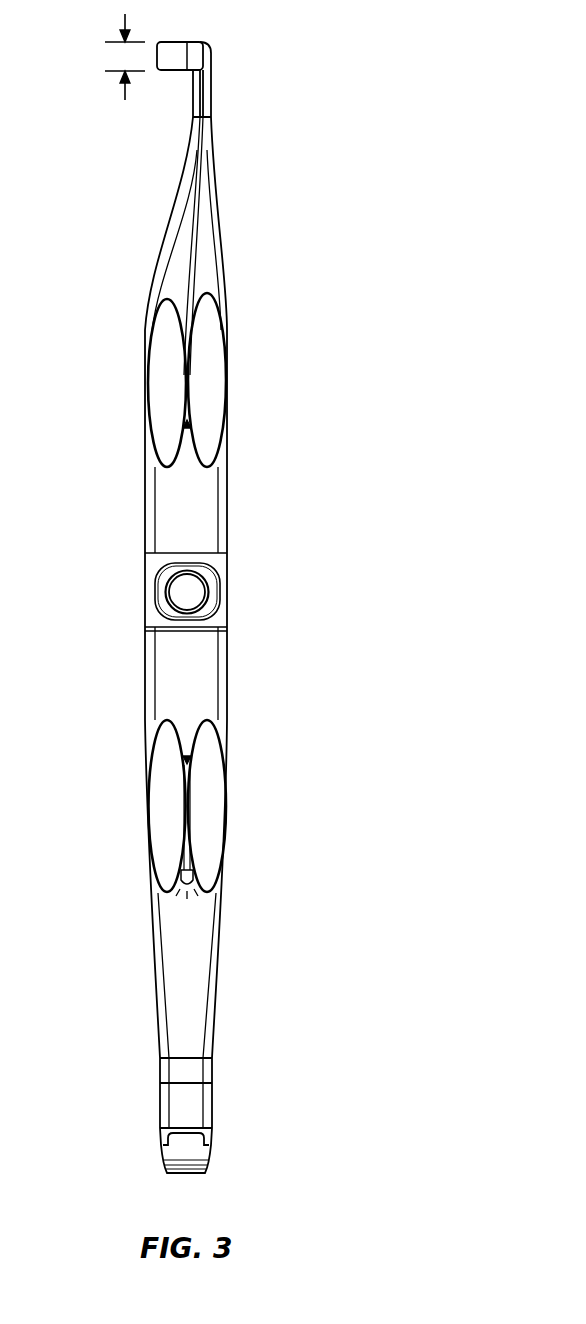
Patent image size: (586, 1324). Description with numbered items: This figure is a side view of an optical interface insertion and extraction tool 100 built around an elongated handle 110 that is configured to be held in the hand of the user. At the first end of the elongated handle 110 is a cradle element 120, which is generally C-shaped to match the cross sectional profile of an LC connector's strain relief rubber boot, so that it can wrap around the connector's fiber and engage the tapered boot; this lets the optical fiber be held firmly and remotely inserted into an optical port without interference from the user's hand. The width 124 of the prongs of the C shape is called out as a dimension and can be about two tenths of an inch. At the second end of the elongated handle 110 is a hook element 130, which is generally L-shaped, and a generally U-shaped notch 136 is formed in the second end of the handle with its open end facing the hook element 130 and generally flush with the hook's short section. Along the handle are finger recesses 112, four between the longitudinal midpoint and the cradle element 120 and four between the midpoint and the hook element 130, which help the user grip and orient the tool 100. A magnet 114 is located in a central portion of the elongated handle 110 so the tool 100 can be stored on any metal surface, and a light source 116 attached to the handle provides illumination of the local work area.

The optical interface insertion and extraction tool 100 is at (376, 93).
The elongated handle 110 is at (212, 200).
The finger recess 112 is at (204, 367).
The magnet 114 is at (217, 590).
The light source 116 is at (195, 892).
The cradle element 120 is at (177, 42).
The width of the prongs 124 is at (102, 56).
The hook element 130 is at (186, 1176).
The notch 136 is at (186, 1135).